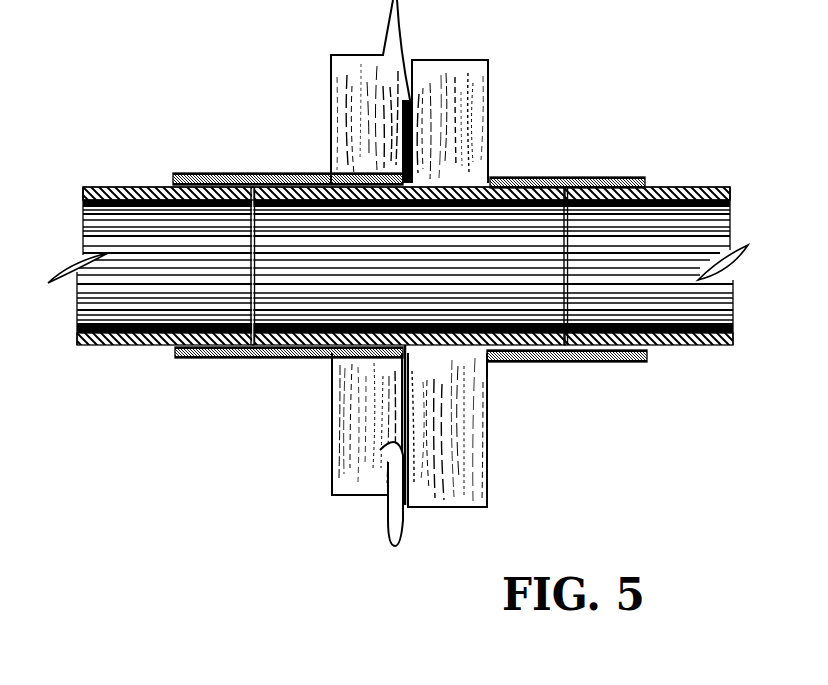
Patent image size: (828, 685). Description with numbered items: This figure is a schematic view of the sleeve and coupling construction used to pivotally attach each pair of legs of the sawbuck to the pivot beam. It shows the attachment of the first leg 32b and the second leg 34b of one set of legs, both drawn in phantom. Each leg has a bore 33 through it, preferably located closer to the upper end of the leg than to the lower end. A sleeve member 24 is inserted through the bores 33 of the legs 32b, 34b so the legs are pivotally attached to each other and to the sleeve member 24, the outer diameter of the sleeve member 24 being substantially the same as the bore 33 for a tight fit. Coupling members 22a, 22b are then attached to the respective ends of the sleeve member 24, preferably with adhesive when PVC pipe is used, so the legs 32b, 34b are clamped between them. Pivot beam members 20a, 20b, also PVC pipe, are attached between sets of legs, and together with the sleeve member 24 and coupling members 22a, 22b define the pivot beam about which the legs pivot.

The pivot beam member 20a is at (640, 278).
The pivot beam member 20b is at (167, 288).
The coupling member 22a is at (558, 178).
The coupling member 22b is at (278, 173).
The sleeve member 24 is at (420, 290).
The first leg 32b is at (358, 115).
The bore 33 is at (458, 187).
The second leg 34b is at (450, 123).